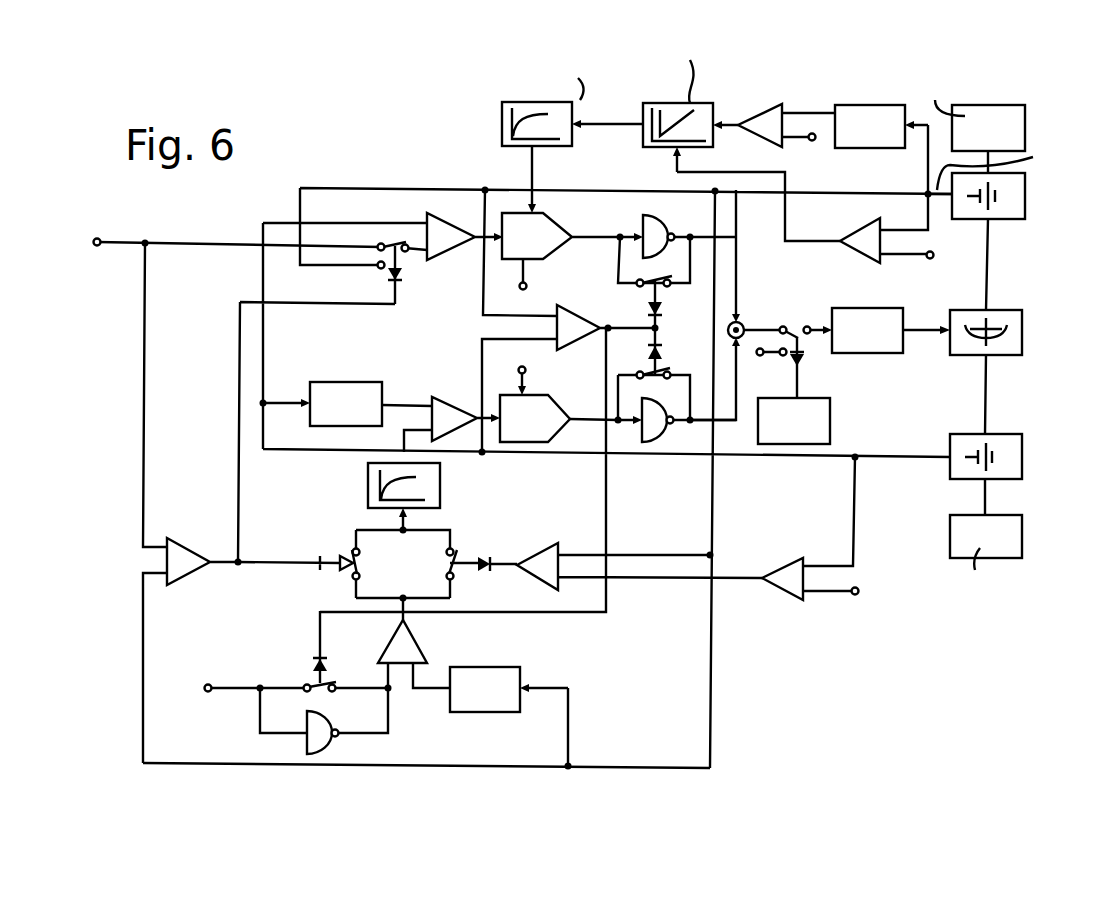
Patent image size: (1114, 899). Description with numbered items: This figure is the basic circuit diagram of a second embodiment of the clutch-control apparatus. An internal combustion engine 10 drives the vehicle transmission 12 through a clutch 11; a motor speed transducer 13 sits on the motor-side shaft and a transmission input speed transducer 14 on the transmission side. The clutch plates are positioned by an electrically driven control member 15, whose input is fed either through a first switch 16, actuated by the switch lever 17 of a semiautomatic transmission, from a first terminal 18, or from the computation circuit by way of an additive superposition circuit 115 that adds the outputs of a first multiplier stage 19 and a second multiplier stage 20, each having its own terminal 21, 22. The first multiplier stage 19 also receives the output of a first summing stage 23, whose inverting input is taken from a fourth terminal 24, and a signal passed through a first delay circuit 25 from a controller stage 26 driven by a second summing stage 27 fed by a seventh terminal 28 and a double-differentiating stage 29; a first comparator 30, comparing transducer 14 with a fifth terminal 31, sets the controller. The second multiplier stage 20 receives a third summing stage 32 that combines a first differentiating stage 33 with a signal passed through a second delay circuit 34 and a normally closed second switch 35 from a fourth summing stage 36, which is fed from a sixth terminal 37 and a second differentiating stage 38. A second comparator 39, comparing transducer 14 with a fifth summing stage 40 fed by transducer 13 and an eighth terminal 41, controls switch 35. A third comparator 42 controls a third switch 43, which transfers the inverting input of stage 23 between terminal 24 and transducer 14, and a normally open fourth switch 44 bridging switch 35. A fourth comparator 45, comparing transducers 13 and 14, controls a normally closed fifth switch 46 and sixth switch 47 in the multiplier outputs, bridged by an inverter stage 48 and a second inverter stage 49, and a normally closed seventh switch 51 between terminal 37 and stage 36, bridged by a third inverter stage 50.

The internal combustion engine 10 is at (1010, 536).
The clutch 11 is at (1012, 340).
The vehicle transmission 12 is at (1012, 125).
The motor speed transducer 13 is at (1012, 460).
The transmission input speed transducer 14 is at (1013, 193).
The control member 15 is at (872, 345).
The first switch 16 is at (795, 305).
The switch lever 17 is at (832, 405).
The first terminal 18 is at (760, 357).
The first multiplier stage 19 is at (552, 230).
The second multiplier stage 20 is at (552, 425).
The terminal 21 is at (530, 285).
The terminal 22 is at (528, 370).
The first summing stage 23 is at (430, 215).
The fourth terminal 24 is at (93, 243).
The first delay circuit 25 is at (505, 135).
The controller stage 26 is at (642, 140).
The second summing stage 27 is at (760, 138).
The seventh terminal 28 is at (812, 142).
The double-differentiating stage 29 is at (868, 148).
The first comparator 30 is at (858, 225).
The fifth terminal 31 is at (934, 258).
The third summing stage 32 is at (455, 412).
The first differentiating stage 33 is at (362, 388).
The second delay circuit 34 is at (433, 478).
The second switch 35 is at (460, 555).
The fourth summing stage 36 is at (400, 640).
The sixth terminal 37 is at (205, 690).
The second differentiating stage 38 is at (488, 675).
The second comparator 39 is at (540, 560).
The fifth summing stage 40 is at (780, 572).
The eighth terminal 41 is at (860, 592).
The third comparator 42 is at (188, 555).
The third switch 43 is at (405, 253).
The fourth switch 44 is at (352, 548).
The fourth comparator 45 is at (578, 312).
The fifth switch 46 is at (664, 290).
The sixth switch 47 is at (666, 370).
The inverter stage 48 is at (661, 225).
The second inverter stage 49 is at (663, 432).
The third inverter stage 50 is at (327, 742).
The seventh switch 51 is at (315, 680).
The additive superposition circuit 115 is at (745, 322).